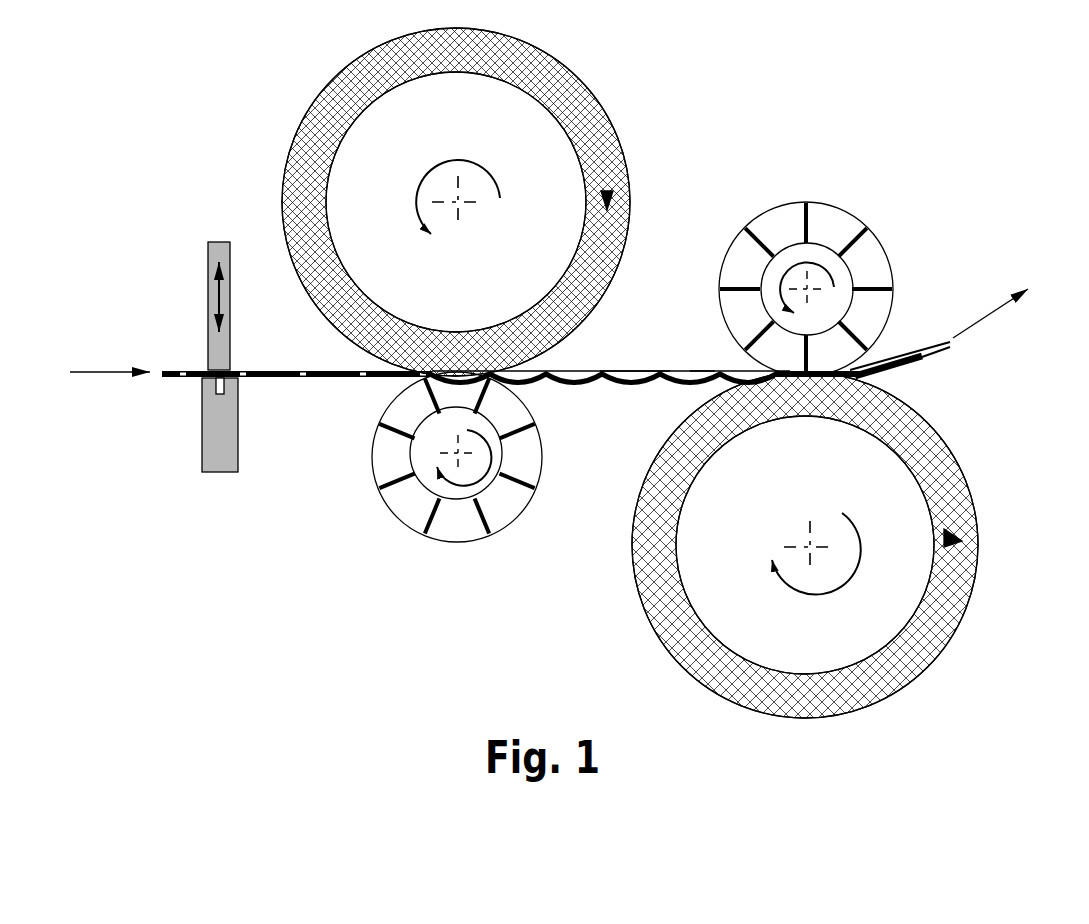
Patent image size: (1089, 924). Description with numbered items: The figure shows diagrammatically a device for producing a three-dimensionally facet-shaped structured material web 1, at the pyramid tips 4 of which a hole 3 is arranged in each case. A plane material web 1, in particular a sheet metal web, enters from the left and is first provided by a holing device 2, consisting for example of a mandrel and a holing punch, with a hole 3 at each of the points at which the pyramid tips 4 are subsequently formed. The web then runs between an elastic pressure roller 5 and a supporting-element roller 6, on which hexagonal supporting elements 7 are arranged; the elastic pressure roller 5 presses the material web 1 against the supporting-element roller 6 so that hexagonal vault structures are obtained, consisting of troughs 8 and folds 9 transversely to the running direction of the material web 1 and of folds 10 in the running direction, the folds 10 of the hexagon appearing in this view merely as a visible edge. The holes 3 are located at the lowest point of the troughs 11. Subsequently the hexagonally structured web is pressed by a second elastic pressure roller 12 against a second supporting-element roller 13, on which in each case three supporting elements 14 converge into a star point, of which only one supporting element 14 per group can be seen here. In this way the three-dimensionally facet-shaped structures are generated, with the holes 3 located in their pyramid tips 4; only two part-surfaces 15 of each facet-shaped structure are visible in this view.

The material web 1 is at (171, 380).
The holing device 2 is at (217, 238).
The hole 3 is at (277, 380).
The pyramid tips 4 is at (929, 367).
The elastic pressure roller 5 is at (622, 156).
The supporting-element roller 6 is at (423, 436).
The hexagonal supporting elements 7 is at (523, 432).
The troughs 8 is at (611, 388).
The folds 9 is at (606, 366).
The folds 10 is at (702, 366).
The troughs 11 is at (684, 388).
The elastic pressure roller 12 is at (979, 572).
The supporting-element roller 13 is at (848, 290).
The supporting elements 14 is at (750, 232).
The part-surfaces 15 is at (914, 349).